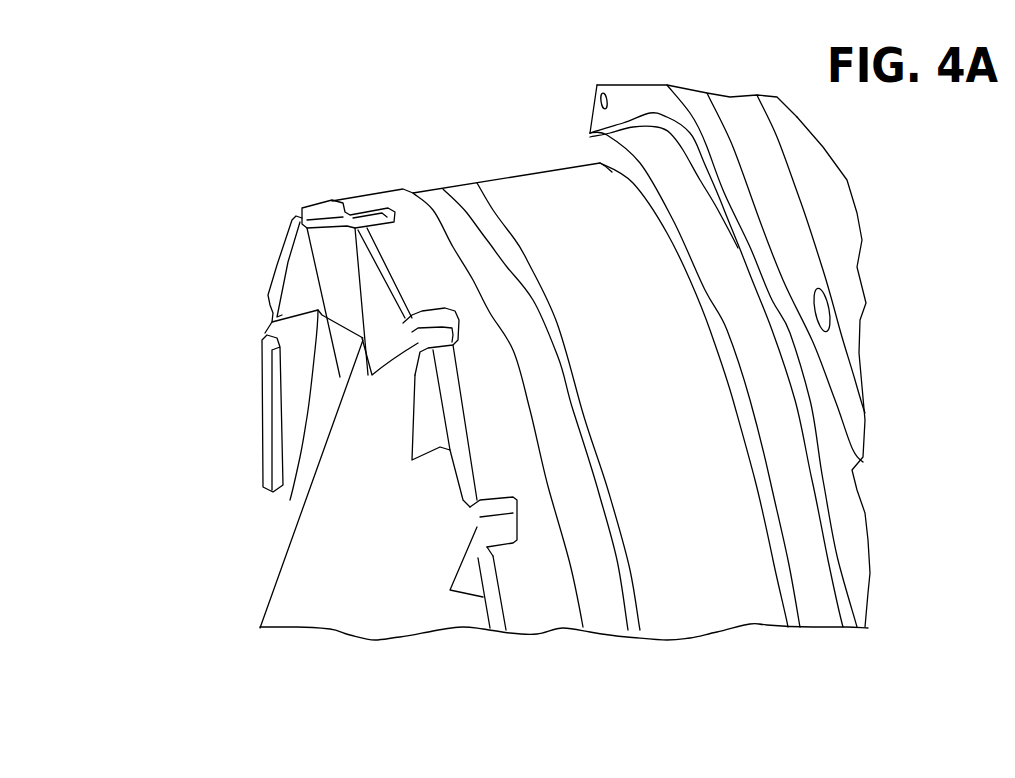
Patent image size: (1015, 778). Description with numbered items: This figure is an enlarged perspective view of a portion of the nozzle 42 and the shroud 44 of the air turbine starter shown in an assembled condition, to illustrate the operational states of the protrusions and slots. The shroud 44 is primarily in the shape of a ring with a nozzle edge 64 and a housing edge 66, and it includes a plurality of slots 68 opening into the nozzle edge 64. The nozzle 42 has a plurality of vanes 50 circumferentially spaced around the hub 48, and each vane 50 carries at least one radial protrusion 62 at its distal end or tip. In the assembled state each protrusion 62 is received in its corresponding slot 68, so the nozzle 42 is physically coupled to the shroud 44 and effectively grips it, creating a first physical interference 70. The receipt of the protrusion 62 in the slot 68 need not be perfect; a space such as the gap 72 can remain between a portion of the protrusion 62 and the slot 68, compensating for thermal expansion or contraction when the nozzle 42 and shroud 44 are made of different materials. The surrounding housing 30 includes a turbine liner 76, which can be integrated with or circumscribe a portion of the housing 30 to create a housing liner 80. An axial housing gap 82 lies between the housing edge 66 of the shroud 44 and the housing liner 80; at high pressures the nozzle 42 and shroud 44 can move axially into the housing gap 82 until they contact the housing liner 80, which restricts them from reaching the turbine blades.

The housing 30 is at (777, 560).
The turbine liner 76 is at (776, 356).
The housing liner 80 is at (852, 277).
The shroud 44 is at (411, 190).
The slots 68 is at (494, 216).
The vanes 50 is at (312, 266).
The first physical interference 70 is at (403, 321).
The housing gap 82 is at (405, 323).
The nozzle 42 is at (305, 445).
The hub 48 is at (270, 575).
The radial protrusion 62 is at (478, 523).
The nozzle edge 64 is at (483, 597).
The gap 72 is at (521, 548).
The housing edge 66 is at (610, 537).